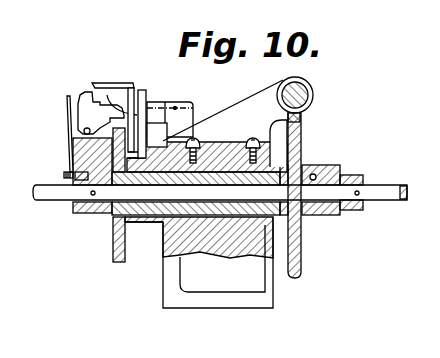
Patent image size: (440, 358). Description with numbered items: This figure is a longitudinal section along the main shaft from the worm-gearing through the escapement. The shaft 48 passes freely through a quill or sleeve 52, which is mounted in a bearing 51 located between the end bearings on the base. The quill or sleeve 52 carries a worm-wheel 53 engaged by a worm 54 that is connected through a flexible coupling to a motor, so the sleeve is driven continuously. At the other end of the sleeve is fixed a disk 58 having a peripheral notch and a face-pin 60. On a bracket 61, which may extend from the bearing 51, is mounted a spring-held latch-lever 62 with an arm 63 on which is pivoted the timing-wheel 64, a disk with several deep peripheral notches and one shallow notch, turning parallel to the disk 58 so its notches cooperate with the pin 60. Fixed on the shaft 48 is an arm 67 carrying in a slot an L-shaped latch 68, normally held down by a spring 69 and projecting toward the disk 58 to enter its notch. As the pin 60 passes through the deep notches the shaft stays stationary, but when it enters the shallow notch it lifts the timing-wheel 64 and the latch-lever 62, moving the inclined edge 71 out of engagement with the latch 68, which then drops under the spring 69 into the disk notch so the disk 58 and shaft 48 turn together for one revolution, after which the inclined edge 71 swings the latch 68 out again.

The shaft 48 is at (50, 199).
The bearing 51 is at (225, 287).
The quill or sleeve 52 is at (115, 233).
The worm-wheel 53 is at (300, 143).
The worm 54 is at (307, 97).
The disk 58 is at (128, 258).
The face-pin 60 is at (128, 177).
The bracket 61 is at (172, 103).
The latch-lever 62 is at (136, 88).
The arm 63 is at (115, 83).
The timing-wheel 64 is at (147, 95).
The arm 67 is at (83, 152).
The L-shaped latch 68 is at (78, 97).
The spring 69 is at (66, 122).
The inclined edge 71 is at (88, 90).